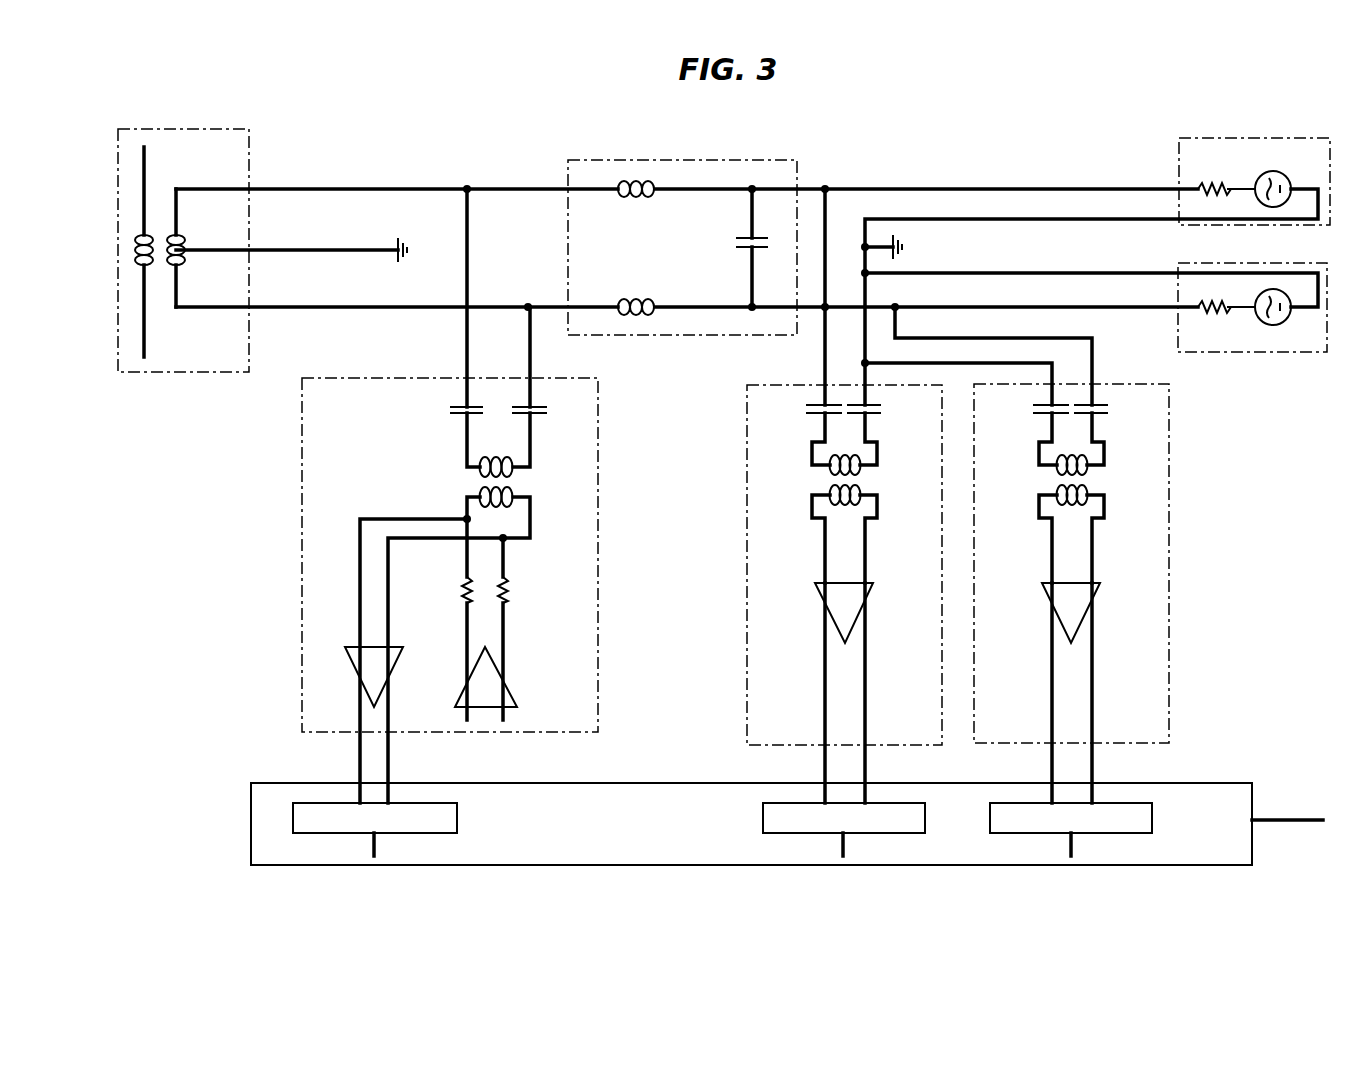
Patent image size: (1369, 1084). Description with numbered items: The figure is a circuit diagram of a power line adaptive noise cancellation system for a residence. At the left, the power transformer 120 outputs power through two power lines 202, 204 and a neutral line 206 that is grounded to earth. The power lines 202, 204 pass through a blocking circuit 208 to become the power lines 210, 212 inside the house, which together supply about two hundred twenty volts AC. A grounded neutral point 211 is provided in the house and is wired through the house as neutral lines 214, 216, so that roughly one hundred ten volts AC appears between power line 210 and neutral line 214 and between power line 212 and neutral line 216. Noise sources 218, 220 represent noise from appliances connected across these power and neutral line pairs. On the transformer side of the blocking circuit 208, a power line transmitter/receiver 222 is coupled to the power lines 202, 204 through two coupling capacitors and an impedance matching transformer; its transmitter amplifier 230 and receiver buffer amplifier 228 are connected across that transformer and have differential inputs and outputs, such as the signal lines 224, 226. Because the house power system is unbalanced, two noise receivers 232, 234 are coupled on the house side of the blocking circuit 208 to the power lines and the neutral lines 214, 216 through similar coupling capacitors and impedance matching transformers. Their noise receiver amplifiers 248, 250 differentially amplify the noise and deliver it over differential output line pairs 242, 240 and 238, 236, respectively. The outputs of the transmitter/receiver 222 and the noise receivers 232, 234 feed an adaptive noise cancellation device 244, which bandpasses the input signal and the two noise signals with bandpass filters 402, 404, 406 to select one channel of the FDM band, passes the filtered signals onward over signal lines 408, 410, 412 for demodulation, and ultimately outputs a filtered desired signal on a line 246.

The power transformer 120 is at (195, 128).
The power line 202 is at (392, 188).
The power line 204 is at (330, 310).
The neutral line 206 is at (283, 248).
The blocking circuit 208 is at (645, 160).
The power line 210 is at (985, 188).
The neutral point 211 is at (893, 240).
The power line 212 is at (1095, 308).
The neutral line 214 is at (1108, 218).
The neutral line 216 is at (1055, 272).
The noise source 218 is at (1243, 138).
The noise source 220 is at (1218, 352).
The power line transmitter/receiver 222 is at (302, 560).
The signal line 224 is at (360, 750).
The signal line 226 is at (388, 750).
The receiver buffer amplifier 228 is at (345, 660).
The transmitter amplifier 230 is at (510, 695).
The noise receiver 232 is at (747, 498).
The noise receiver 234 is at (1169, 690).
The differential output line 236 is at (1093, 672).
The differential output line 238 is at (1052, 672).
The differential output line 240 is at (865, 672).
The differential output line 242 is at (825, 672).
The adaptive noise cancellation device 244 is at (251, 840).
The line 246 is at (1270, 820).
The noise receiver amplifier 248 is at (822, 600).
The noise receiver amplifier 250 is at (1100, 595).
The bandpass filter 402 is at (457, 812).
The bandpass filter 404 is at (763, 812).
The bandpass filter 406 is at (1152, 812).
The signal line 408 is at (374, 848).
The signal line 410 is at (843, 843).
The signal line 412 is at (1071, 842).